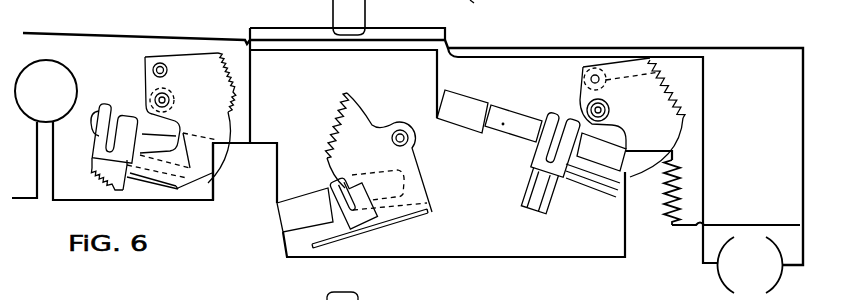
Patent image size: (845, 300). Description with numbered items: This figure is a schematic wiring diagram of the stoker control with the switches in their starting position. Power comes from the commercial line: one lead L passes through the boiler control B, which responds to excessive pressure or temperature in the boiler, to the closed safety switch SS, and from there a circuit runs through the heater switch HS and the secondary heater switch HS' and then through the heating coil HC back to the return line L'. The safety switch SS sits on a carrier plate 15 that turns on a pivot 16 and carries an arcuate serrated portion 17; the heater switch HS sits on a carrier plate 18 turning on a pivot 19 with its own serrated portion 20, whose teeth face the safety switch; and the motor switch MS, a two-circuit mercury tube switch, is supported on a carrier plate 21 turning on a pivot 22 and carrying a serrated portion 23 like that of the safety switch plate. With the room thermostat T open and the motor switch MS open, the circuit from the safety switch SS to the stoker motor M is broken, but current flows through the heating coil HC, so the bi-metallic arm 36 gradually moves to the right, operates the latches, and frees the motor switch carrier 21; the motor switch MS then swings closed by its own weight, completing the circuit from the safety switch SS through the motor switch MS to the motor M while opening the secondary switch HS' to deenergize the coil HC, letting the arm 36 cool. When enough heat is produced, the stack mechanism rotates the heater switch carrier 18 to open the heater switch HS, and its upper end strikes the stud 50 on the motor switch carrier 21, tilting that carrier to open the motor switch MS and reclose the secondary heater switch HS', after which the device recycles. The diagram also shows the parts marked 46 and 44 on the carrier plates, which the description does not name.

The return line L' is at (413, 139).
The lead L is at (24, 174).
The boiler control B is at (42, 92).
The room thermostat T is at (349, 17).
The bi-metallic arm 36 is at (483, 3).
The carrier plate 15 is at (210, 120).
The arcuate serrated portion 17 is at (226, 74).
The pin 46 is at (153, 67).
The pivot 16 is at (155, 97).
The safety switch SS is at (216, 163).
The arcuate serrated portion 20 is at (333, 117).
The pivot 19 is at (401, 130).
The carrier plate 18 is at (417, 203).
The heater switch HS is at (327, 201).
The motor switch MS is at (489, 116).
The carrier plate 21 is at (642, 125).
The arcuate serrated portion 23 is at (667, 97).
The pin 44 is at (590, 78).
The stud 50 is at (660, 72).
The pivot 22 is at (595, 108).
The secondary heater switch HS' is at (596, 165).
The heating coil HC is at (667, 213).
The motor M is at (749, 265).